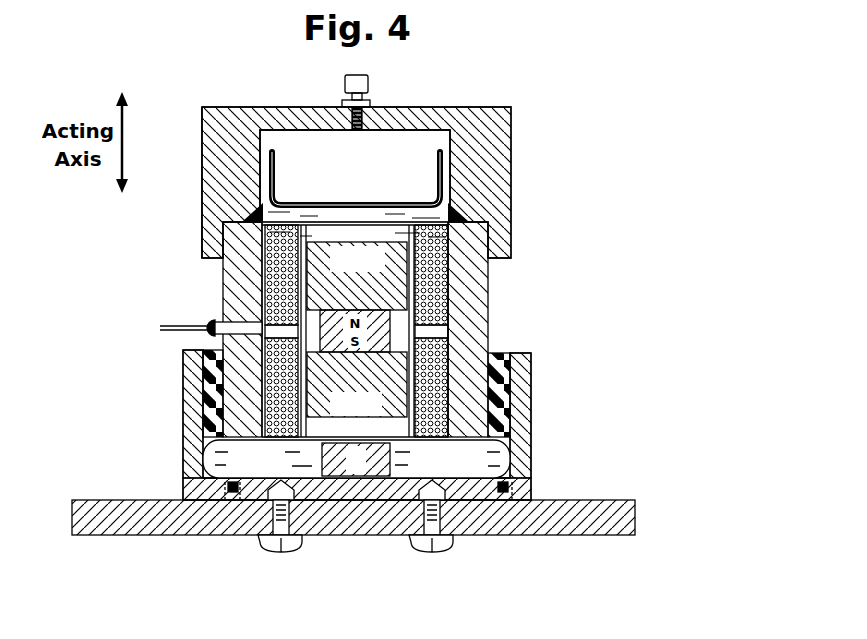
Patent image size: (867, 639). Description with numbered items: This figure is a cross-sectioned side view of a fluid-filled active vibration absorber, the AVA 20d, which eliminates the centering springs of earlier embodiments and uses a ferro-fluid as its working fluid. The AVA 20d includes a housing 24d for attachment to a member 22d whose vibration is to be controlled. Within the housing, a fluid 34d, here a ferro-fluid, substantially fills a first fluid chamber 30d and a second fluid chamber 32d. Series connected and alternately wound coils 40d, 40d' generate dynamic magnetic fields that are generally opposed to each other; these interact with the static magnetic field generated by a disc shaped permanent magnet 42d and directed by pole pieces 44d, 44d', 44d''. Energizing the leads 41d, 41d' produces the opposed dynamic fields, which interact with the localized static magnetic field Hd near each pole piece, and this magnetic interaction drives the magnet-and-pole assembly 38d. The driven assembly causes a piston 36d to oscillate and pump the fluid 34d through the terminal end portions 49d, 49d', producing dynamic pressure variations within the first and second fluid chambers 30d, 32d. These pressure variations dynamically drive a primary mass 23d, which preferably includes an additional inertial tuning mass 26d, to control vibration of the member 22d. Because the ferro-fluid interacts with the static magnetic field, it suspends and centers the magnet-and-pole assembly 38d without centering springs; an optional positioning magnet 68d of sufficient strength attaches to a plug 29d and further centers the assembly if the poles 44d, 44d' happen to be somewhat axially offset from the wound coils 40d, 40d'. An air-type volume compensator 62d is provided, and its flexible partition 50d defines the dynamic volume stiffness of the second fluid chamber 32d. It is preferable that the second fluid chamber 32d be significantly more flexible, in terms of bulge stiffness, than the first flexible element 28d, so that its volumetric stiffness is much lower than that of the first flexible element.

The AVA 20d is at (515, 241).
The member 22d is at (523, 536).
The primary mass 23d is at (196, 188).
The housing 24d is at (532, 462).
The inertial tuning mass 26d is at (511, 175).
The first flexible element 28d is at (188, 392).
The plug 29d is at (350, 480).
The first fluid chamber 30d is at (482, 475).
The second fluid chamber 32d is at (380, 235).
The fluid 34d is at (208, 457).
The piston 36d is at (420, 276).
The magnet-and-pole assembly 38d is at (356, 387).
The coil 40d is at (294, 329).
The coil 40d' is at (564, 395).
The lead 41d is at (158, 346).
The lead 41d' is at (127, 324).
The permanent magnet 42d is at (470, 341).
The pole piece 44d is at (357, 384).
The pole piece 44d' is at (357, 276).
The pole piece 44d'' is at (533, 329).
The terminal end portion 49d is at (356, 449).
The terminal end portion 49d' is at (356, 198).
The flexible partition 50d is at (452, 142).
The volume compensator 62d is at (265, 161).
The positioning magnet 68d is at (328, 480).
The static magnetic field Hd is at (240, 292).